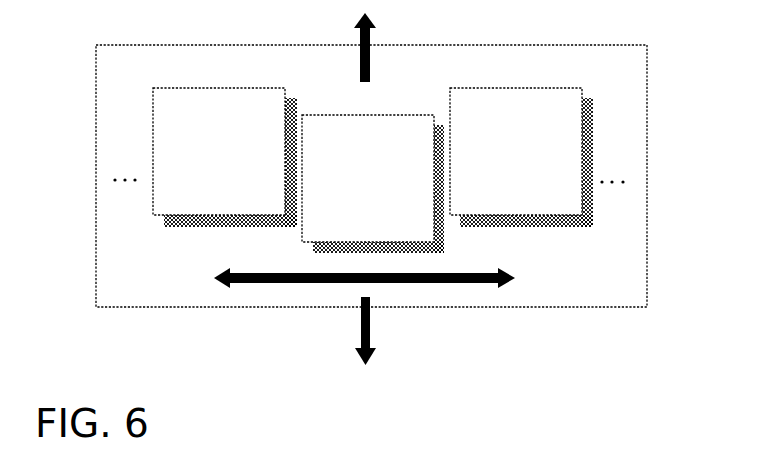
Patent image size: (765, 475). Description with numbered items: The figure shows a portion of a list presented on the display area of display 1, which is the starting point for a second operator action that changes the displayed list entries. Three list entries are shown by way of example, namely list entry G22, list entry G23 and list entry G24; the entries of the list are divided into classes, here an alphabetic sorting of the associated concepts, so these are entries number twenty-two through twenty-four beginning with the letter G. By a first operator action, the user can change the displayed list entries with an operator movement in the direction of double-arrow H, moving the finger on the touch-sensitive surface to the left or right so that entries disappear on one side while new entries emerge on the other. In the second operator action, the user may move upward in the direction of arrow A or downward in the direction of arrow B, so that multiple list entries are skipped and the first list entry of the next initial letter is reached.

The display 1 is at (622, 117).
The list entry G22 is at (225, 157).
The list entry G23 is at (373, 184).
The list entry G24 is at (521, 157).
The arrow A is at (351, 46).
The arrow B is at (352, 334).
The double-arrow H is at (352, 280).